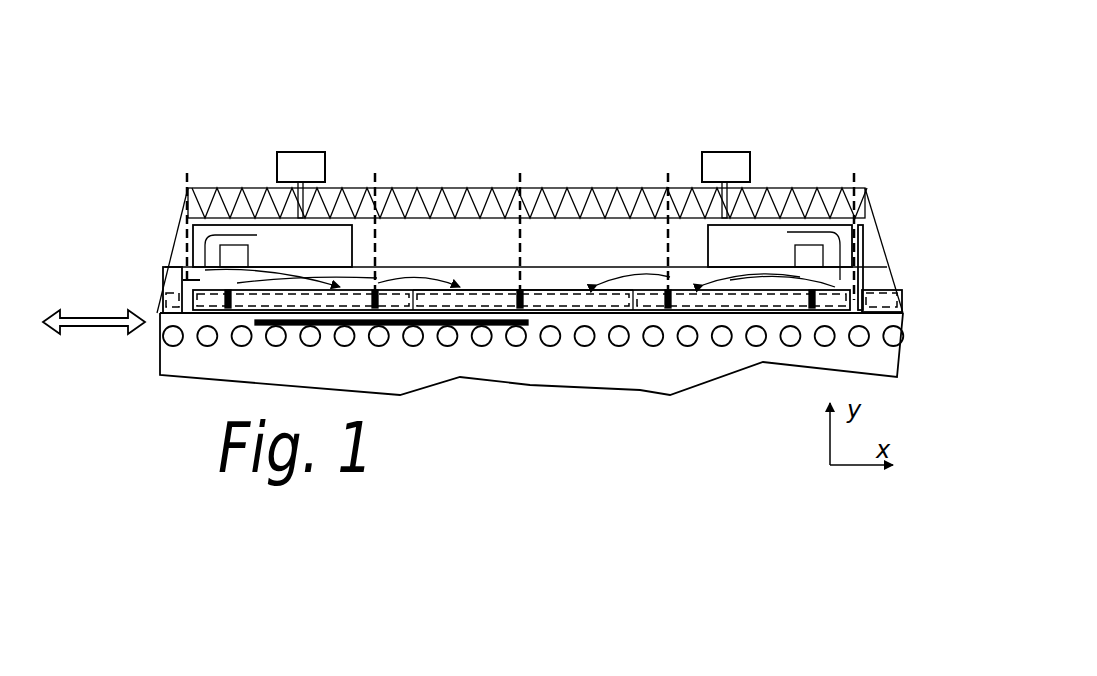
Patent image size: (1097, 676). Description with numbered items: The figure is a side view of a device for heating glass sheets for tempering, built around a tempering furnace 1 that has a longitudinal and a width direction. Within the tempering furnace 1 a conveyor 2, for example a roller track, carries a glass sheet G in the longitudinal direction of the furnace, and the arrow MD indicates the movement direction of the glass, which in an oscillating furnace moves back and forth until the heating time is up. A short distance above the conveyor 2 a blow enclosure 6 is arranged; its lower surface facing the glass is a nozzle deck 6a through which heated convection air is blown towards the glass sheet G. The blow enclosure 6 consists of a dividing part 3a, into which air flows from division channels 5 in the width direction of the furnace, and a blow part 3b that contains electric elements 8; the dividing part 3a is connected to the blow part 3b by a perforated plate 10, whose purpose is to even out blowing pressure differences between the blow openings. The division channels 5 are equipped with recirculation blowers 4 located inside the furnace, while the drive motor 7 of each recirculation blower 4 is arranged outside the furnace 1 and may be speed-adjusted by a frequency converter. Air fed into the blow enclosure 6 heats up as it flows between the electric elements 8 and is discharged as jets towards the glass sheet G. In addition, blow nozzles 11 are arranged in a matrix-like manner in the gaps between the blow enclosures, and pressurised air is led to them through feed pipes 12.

The tempering furnace 1 is at (677, 143).
The conveyor 2 is at (583, 346).
The dividing part 3a is at (550, 278).
The blow part 3b is at (535, 307).
The recirculation blower 4 is at (755, 237).
The division channel 5 is at (323, 232).
The blow enclosure 6 is at (853, 297).
The nozzle deck 6a is at (737, 313).
The drive motor 7 is at (312, 162).
The electric elements 8 is at (670, 312).
The perforated plate 10 is at (495, 290).
The blow nozzles 11 is at (373, 310).
The feed pipes 12 is at (377, 258).
The glass sheet G is at (395, 327).
The movement direction MD is at (103, 332).